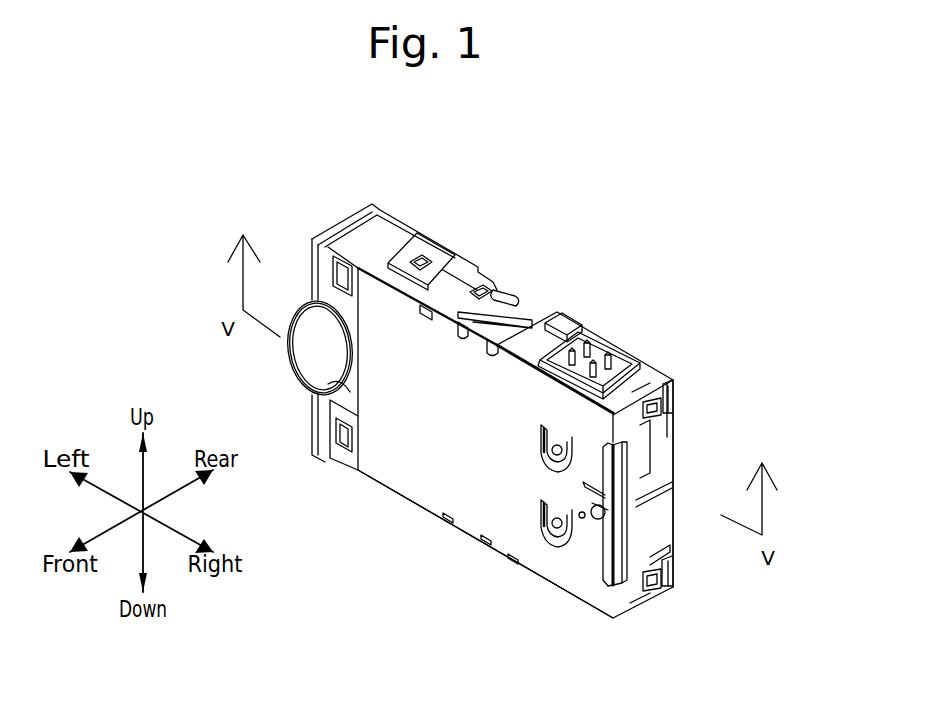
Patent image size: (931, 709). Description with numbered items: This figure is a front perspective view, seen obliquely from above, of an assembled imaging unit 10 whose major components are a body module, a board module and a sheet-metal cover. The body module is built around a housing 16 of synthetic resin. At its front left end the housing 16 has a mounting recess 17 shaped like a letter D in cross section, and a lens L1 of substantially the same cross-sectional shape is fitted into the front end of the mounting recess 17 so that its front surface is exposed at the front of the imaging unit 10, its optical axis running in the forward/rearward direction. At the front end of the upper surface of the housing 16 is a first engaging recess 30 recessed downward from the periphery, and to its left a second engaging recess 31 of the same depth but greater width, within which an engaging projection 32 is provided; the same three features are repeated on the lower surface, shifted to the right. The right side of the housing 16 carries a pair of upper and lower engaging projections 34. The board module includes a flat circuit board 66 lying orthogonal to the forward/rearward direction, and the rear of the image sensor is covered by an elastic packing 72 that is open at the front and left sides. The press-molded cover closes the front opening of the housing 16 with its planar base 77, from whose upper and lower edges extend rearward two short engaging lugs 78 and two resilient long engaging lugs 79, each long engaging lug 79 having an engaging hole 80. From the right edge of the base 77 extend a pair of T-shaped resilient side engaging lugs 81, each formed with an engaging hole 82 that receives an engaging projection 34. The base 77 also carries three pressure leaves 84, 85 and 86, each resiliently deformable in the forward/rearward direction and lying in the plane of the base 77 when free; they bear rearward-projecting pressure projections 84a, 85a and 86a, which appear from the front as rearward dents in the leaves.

The imaging unit 10 is at (646, 285).
The housing 16 is at (670, 458).
The mounting recess 17 is at (337, 385).
The lens L1 is at (328, 367).
The first engaging recess 30 is at (457, 350).
The second engaging recess 31 is at (453, 318).
The engaging projection 32 is at (483, 286).
The engaging projections 34 is at (661, 410).
The circuit board 66 is at (625, 520).
The packing 72 is at (632, 537).
The base 77 is at (405, 495).
The short engaging lugs 78 is at (545, 318).
The long engaging lugs 79 is at (520, 298).
The engaging hole 80 is at (500, 298).
The side engaging lugs 81 is at (622, 402).
The engaging hole 82 is at (665, 382).
The pressure leaf 84 is at (540, 426).
The pressure projection 84a is at (551, 450).
The pressure leaf 85 is at (541, 524).
The pressure projection 85a is at (541, 505).
The pressure leaf 86 is at (583, 519).
The pressure projection 86a is at (603, 516).